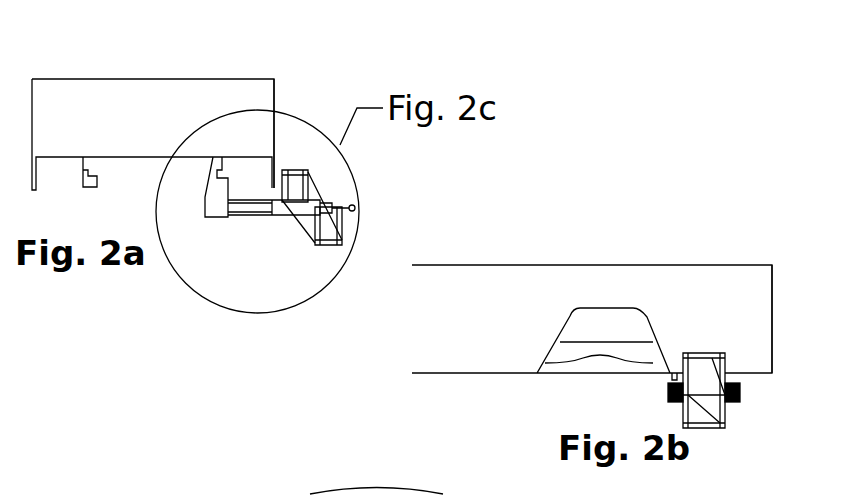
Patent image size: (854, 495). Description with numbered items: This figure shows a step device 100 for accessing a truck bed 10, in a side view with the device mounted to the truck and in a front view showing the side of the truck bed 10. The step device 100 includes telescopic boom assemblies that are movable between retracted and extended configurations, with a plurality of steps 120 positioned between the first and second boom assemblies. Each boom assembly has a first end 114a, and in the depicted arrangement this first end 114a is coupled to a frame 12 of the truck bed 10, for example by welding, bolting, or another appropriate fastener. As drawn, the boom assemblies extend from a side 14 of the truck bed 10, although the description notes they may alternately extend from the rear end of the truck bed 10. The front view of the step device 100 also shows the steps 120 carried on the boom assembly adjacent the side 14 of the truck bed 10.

In FIG. 2A, the truck bed 10 is at (118, 84).
In FIG. 2B, the truck bed 10 is at (600, 265).
In FIG. 2A, the side 14 is at (277, 95).
In FIG. 2B, the side 14 is at (720, 310).
In FIG. 2A, the frame 12 is at (198, 203).
In FIG. 2A, the first end 114a is at (228, 218).
In FIG. 2A, the step device 100 is at (288, 218).
In FIG. 2B, the step device 100 is at (667, 393).
In FIG. 2B, the steps 120 is at (712, 360).